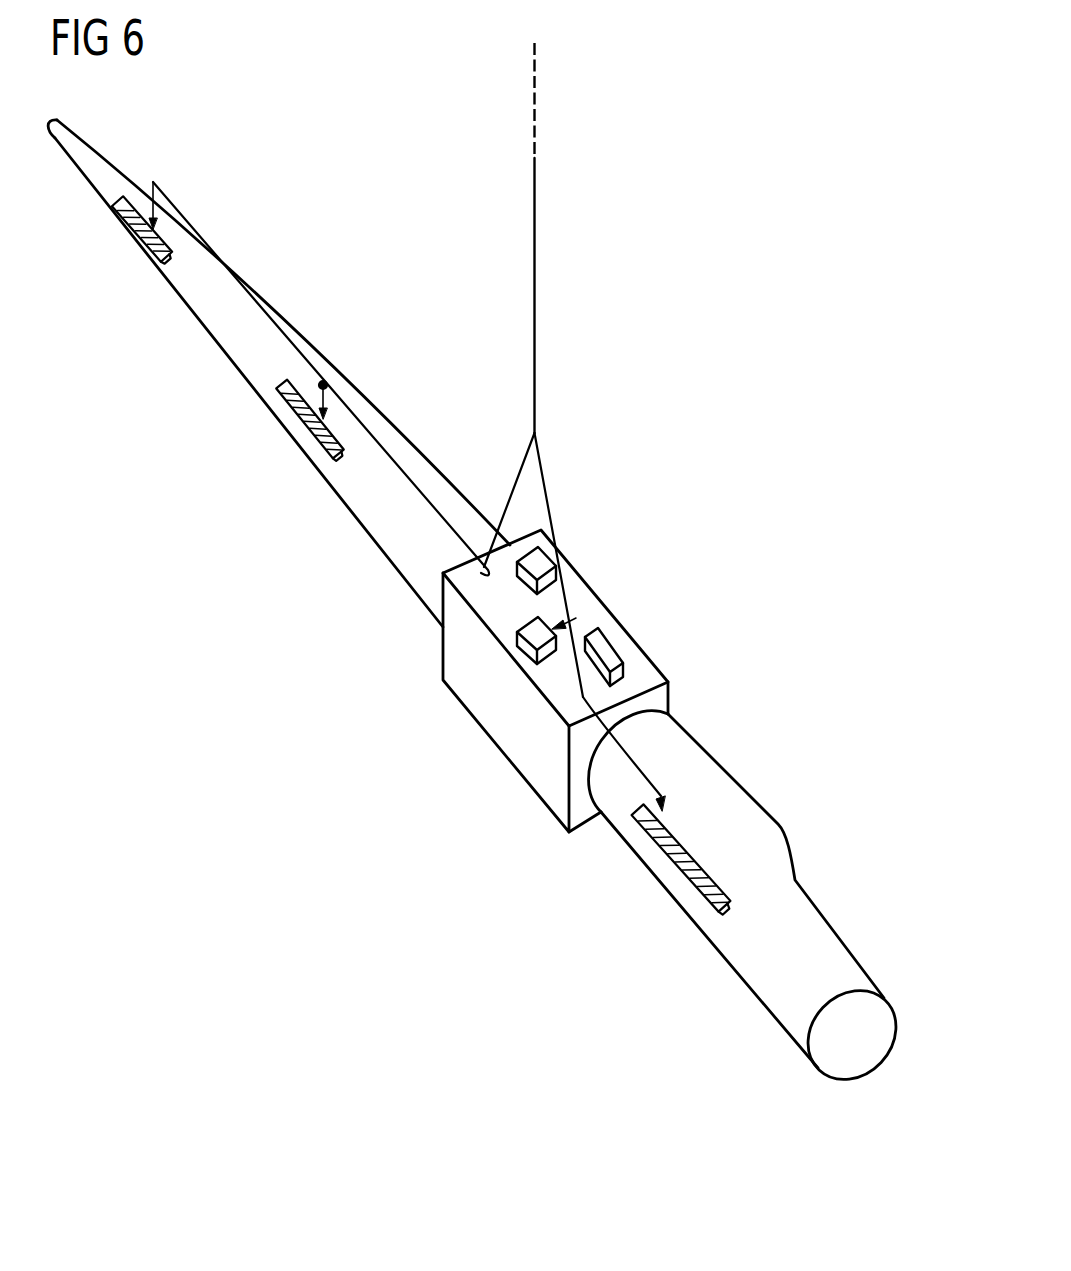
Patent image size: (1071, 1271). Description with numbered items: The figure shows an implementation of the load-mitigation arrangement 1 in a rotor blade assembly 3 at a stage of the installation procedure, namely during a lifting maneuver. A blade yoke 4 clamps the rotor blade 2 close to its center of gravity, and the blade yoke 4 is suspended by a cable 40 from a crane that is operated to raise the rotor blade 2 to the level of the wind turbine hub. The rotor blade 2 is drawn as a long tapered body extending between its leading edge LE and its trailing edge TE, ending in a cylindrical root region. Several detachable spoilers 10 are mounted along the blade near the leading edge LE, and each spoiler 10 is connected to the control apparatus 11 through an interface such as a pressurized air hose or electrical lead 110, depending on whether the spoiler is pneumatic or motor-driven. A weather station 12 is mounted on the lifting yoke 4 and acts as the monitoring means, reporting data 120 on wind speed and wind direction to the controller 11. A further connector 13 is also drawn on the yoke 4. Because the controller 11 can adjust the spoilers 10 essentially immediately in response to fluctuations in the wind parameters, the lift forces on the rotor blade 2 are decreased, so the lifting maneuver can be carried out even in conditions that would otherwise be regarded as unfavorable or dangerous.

The load-mitigation arrangement 1 is at (497, 820).
The rotor blade 2 is at (803, 876).
The rotor blade assembly 3 is at (770, 595).
The blade yoke 4 is at (653, 677).
The spoiler 10 is at (141, 243).
The control apparatus 11 is at (518, 648).
The weather station 12 is at (547, 562).
The connector 13 is at (605, 647).
The cable 40 is at (537, 365).
The pressurized air hose or electrical lead 110 is at (352, 420).
The data 120 is at (567, 588).
The leading edge LE is at (387, 553).
The trailing edge TE is at (755, 798).